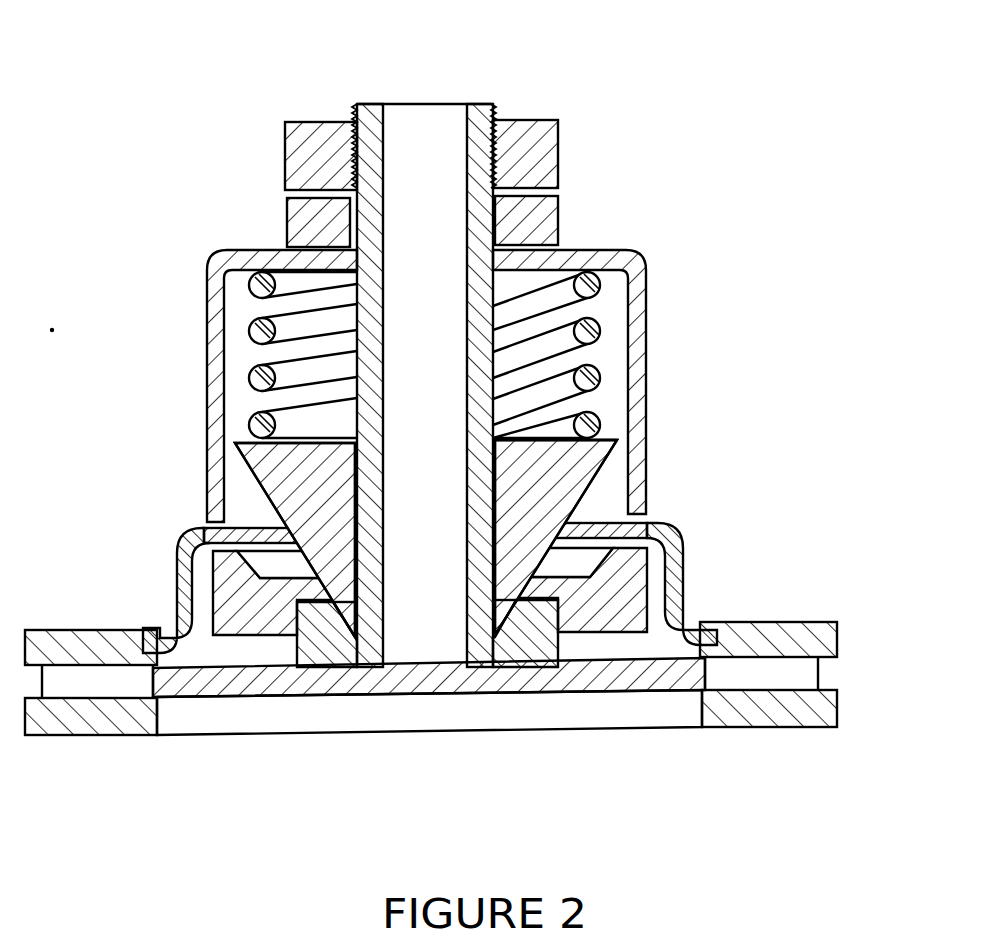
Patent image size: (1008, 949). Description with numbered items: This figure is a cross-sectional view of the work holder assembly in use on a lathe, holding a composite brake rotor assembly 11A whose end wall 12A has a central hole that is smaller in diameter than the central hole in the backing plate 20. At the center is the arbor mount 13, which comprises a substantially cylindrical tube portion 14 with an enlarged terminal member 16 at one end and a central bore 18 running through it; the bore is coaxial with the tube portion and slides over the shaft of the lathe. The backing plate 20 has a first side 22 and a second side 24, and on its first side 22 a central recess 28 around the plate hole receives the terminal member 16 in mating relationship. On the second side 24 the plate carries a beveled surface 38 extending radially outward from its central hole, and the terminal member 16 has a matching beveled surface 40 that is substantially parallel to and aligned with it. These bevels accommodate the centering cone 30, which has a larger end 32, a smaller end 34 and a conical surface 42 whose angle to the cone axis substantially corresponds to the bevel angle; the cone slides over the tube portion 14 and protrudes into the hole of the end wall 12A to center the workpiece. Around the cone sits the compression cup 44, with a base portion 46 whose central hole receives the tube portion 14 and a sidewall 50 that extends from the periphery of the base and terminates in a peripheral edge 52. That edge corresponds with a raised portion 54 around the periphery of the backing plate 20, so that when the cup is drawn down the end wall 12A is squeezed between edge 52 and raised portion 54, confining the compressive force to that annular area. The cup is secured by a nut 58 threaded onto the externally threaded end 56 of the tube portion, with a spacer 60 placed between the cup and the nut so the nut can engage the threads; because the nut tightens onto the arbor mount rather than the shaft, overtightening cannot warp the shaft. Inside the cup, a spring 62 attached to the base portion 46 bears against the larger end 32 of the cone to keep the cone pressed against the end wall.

The composite brake rotor assembly 11A is at (806, 615).
The end wall 12A is at (512, 573).
The arbor mount 13 is at (364, 100).
The tube portion 14 is at (550, 223).
The terminal member 16 is at (292, 655).
The central bore 18 is at (436, 100).
The backing plate 20 is at (207, 593).
The first side 22 is at (228, 648).
The second side 24 is at (218, 530).
The central recess 28 is at (503, 590).
The centering cone 30 is at (615, 453).
The larger end 32 is at (605, 437).
The smaller end 34 is at (272, 548).
The beveled surface 38 is at (495, 592).
The beveled surface 40 is at (312, 618).
The conical surface 42 is at (245, 463).
The compression cup 44 is at (480, 364).
The base portion 46 is at (585, 252).
The sidewall 50 is at (646, 335).
The peripheral edge 52 is at (175, 563).
The raised portion 54 is at (672, 523).
The end 56 is at (483, 107).
The nut 58 is at (558, 133).
The spacer 60 is at (558, 198).
The spring 62 is at (278, 300).